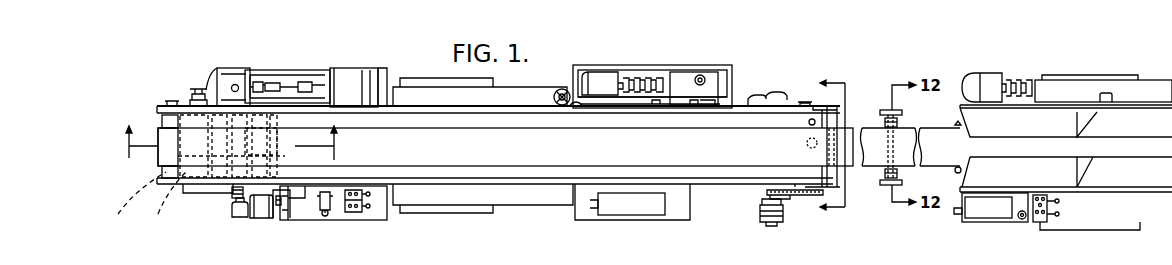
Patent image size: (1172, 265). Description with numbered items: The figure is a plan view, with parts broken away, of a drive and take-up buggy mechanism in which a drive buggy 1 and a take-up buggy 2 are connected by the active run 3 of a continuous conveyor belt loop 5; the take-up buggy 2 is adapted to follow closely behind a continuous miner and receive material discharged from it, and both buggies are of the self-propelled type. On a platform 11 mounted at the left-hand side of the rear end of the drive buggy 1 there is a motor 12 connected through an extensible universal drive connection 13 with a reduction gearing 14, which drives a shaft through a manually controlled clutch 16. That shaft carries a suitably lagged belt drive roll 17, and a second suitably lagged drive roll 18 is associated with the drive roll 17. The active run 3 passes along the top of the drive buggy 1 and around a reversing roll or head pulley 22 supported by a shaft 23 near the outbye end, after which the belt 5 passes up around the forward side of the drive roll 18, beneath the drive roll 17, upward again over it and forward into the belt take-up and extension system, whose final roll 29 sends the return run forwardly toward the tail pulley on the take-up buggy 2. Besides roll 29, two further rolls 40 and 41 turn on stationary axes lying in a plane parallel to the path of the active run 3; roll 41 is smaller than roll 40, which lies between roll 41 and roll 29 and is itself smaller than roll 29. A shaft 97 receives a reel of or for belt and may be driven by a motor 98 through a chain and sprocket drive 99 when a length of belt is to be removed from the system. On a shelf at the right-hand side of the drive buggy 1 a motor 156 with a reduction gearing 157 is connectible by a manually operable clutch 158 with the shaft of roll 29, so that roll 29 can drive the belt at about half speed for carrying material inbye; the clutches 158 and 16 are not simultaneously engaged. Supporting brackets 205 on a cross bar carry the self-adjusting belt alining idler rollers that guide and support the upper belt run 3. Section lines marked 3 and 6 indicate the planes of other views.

The drive buggy 1 is at (541, 87).
The take-up buggy 2 is at (1156, 80).
The active run 3 is at (875, 168).
The continuous conveyor belt loop 5 is at (735, 127).
The section line 6- 6 is at (820, 146).
The platform 11 is at (383, 70).
The motor 12 is at (345, 72).
The extensible universal drive connection 13 is at (281, 85).
The reduction gearing 14 is at (233, 72).
The clutch 16 is at (197, 89).
The belt drive roll 17 is at (142, 200).
The second drive roll 18 is at (169, 200).
The reversing roll or head pulley 22 is at (168, 175).
The shaft 23 is at (171, 107).
The final roll 29 is at (278, 121).
The roll 40 is at (280, 137).
The roll 41 is at (280, 156).
The shaft 97 is at (838, 116).
The motor 98 is at (764, 206).
The chain and sprocket drive 99 is at (788, 196).
The motor 156 is at (263, 206).
The reduction gearing 157 is at (240, 207).
The clutch 158 is at (233, 196).
The supporting brackets 205 is at (887, 111).